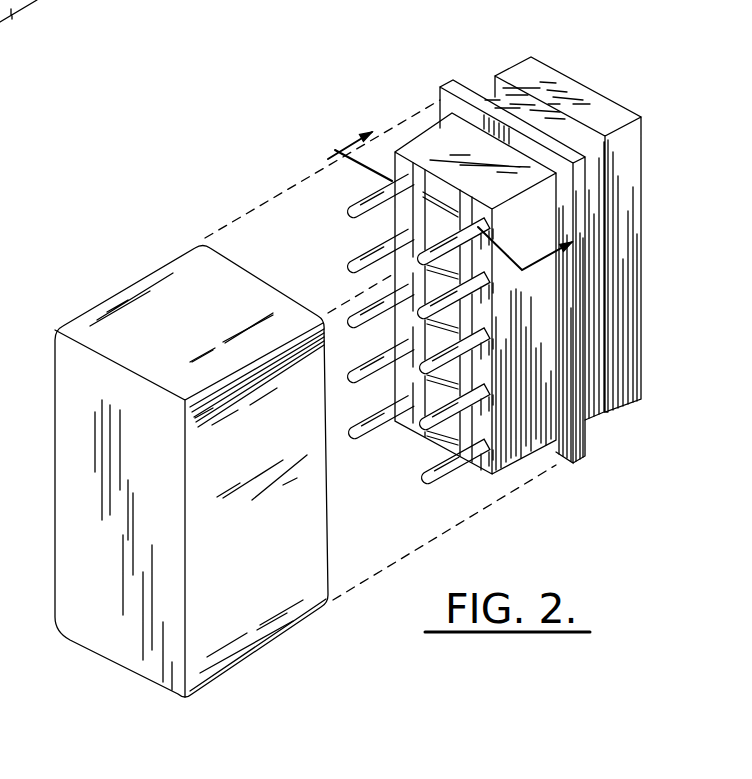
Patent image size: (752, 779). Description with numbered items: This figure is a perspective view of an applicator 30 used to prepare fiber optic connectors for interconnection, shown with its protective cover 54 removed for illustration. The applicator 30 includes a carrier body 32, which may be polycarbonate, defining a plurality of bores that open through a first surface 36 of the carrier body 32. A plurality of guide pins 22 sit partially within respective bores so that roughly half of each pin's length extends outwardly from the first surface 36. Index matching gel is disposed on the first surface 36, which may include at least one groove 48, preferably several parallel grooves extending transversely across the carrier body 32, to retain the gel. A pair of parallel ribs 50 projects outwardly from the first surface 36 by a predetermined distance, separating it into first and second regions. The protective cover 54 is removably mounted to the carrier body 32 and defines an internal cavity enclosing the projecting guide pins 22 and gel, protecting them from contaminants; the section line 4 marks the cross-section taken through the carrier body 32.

The section line 4- 4 is at (450, 182).
The guide pins 22 is at (352, 206).
The applicator 30 is at (598, 68).
The carrier body 32 is at (510, 100).
The first surface 36 is at (440, 185).
The groove 48 is at (482, 358).
The ribs 50 is at (418, 432).
The protective cover 54 is at (255, 630).